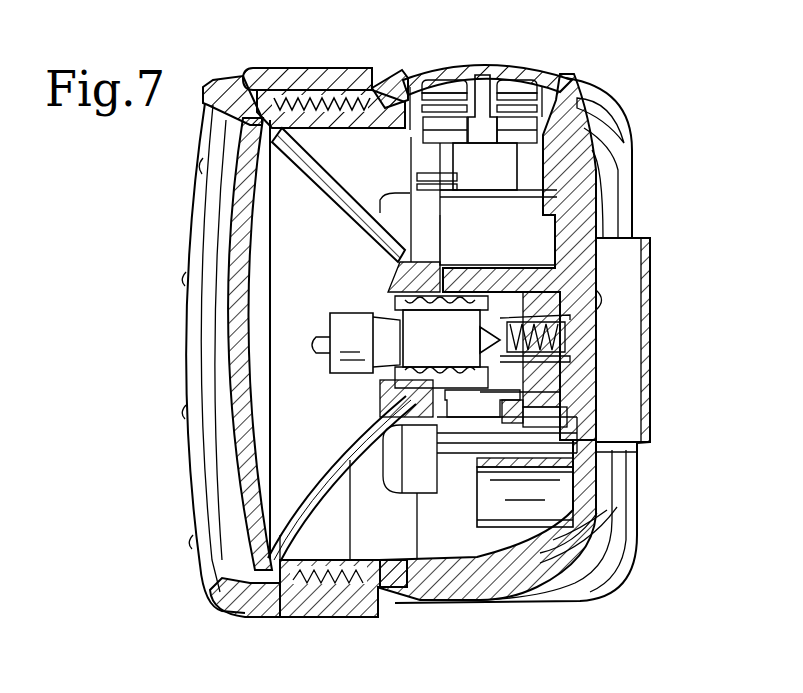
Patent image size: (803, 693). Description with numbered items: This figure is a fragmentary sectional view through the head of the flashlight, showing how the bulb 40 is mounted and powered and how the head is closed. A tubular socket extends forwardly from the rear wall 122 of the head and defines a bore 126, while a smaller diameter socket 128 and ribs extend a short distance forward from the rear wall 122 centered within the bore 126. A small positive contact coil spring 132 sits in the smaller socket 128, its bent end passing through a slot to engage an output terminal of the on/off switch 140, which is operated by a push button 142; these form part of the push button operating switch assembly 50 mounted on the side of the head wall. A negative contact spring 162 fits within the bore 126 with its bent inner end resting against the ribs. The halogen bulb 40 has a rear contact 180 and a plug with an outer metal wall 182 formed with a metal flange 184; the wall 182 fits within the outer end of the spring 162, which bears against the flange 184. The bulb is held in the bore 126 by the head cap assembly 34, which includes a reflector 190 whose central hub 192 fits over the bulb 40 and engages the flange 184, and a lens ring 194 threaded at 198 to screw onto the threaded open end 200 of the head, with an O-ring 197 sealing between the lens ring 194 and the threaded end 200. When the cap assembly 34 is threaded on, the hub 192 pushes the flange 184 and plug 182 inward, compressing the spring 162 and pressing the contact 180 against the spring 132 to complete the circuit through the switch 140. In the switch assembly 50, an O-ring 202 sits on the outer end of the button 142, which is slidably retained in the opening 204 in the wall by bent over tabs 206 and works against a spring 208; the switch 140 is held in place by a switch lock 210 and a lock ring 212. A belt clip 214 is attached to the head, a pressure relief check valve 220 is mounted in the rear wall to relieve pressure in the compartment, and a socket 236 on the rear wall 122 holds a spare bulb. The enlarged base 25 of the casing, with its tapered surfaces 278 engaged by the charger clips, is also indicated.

The base 25 is at (585, 601).
The head cap assembly 34 is at (226, 624).
The bulb 40 is at (353, 320).
The push button operating switch assembly 50 is at (407, 50).
The rear wall 122 is at (637, 467).
The bore 126 is at (490, 290).
The smaller diameter socket 128 is at (590, 349).
The positive contact coil spring 132 is at (563, 340).
The on/off switch 140 is at (508, 227).
The push button 142 is at (478, 62).
The negative contact spring 162 is at (575, 312).
The rear contact 180 is at (560, 385).
The outer metal wall 182 is at (455, 344).
The metal flange 184 is at (398, 378).
The reflector 190 is at (350, 485).
The central hub 192 is at (395, 400).
The lens ring 194 is at (247, 527).
The O-ring 197 is at (366, 592).
The threads 198 is at (296, 588).
The threaded open end 200 is at (328, 585).
The O-ring 202 is at (568, 90).
The opening 204 is at (405, 95).
The bent over tabs 206 is at (405, 140).
The spring 208 is at (428, 178).
The switch lock 210 is at (410, 200).
The lock ring 212 is at (560, 170).
The belt clip 214 is at (645, 420).
The pressure relief check valve 220 is at (605, 288).
The socket 236 is at (520, 468).
The tapered surfaces 278 is at (603, 100).